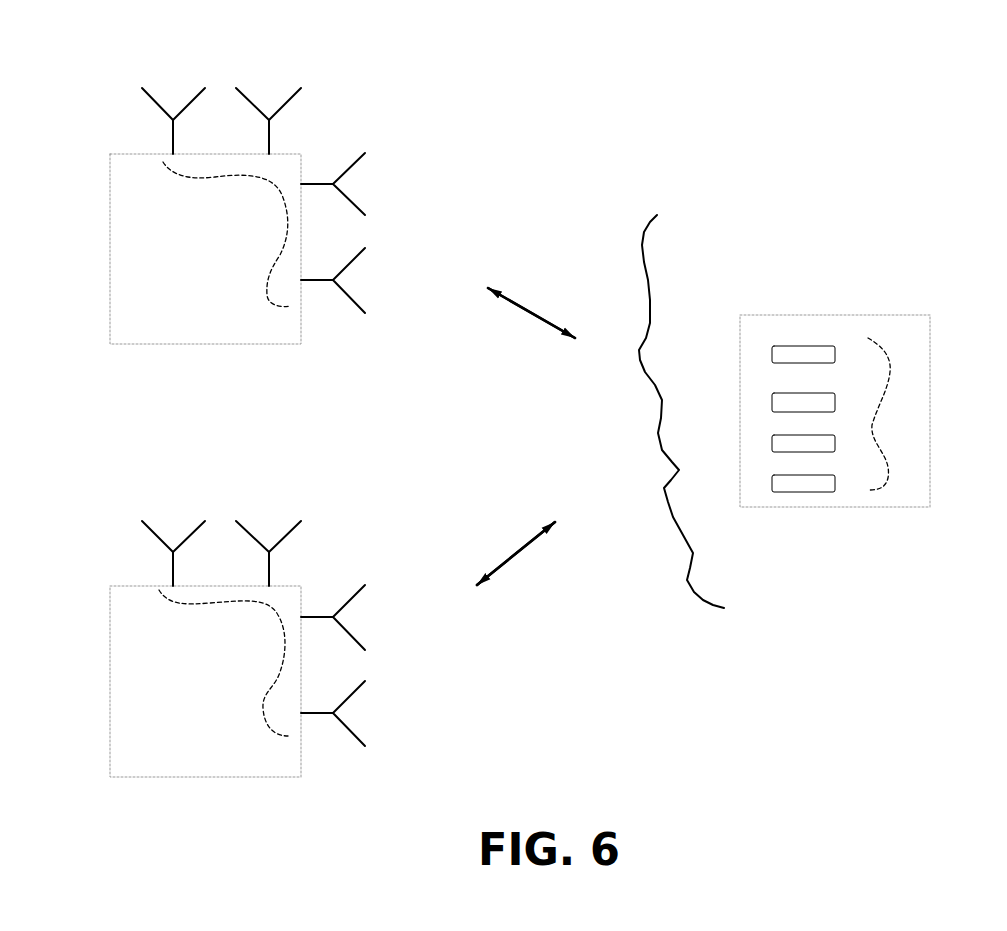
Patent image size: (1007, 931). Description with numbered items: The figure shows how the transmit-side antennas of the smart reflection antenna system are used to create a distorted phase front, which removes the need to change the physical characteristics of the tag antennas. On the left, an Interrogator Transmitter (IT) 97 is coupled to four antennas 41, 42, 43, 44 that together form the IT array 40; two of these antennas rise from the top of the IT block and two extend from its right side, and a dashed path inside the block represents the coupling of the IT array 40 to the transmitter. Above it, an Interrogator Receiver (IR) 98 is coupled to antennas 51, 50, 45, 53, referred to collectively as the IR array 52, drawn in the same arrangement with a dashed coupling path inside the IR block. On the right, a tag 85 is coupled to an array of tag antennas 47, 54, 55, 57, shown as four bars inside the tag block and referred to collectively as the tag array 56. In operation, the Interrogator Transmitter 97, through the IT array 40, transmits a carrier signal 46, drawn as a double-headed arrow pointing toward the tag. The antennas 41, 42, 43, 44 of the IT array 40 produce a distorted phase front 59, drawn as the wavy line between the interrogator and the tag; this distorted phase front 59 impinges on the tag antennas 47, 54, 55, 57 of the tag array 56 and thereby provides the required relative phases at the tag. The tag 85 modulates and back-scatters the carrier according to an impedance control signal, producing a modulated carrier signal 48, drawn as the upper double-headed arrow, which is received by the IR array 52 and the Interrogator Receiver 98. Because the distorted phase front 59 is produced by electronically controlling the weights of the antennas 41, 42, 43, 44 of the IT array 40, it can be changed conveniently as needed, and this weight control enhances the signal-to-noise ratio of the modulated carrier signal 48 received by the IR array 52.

The IT array 40 is at (273, 740).
The IT antenna 41 is at (378, 708).
The IT antenna 42 is at (368, 611).
The IT antenna 43 is at (275, 522).
The IT antenna 44 is at (168, 517).
The IR antenna 45 is at (362, 181).
The carrier signal 46 is at (538, 565).
The tag antenna 47 is at (812, 330).
The modulated carrier signal 48 is at (537, 298).
The IR antenna 50 is at (278, 83).
The IR antenna 51 is at (187, 82).
The IR array 52 is at (270, 200).
The IR antenna 53 is at (377, 283).
The tag antenna 54 is at (843, 403).
The tag antenna 55 is at (845, 447).
The tag array 56 is at (880, 410).
The tag antenna 57 is at (810, 490).
The distorted phase front 59 is at (677, 597).
The tag 85 is at (786, 343).
The Interrogator Transmitter 97 is at (155, 768).
The Interrogator Receiver 98 is at (153, 337).